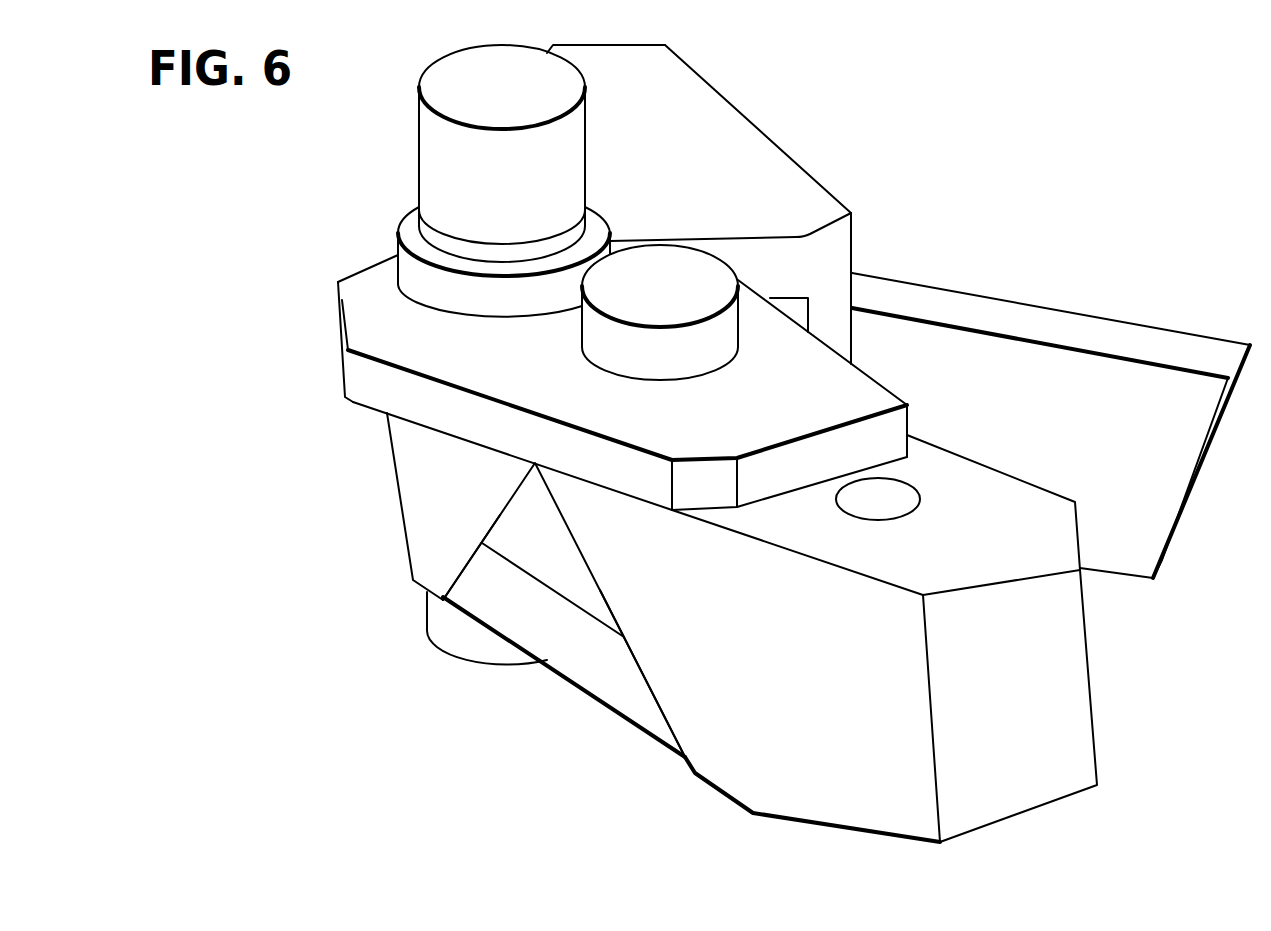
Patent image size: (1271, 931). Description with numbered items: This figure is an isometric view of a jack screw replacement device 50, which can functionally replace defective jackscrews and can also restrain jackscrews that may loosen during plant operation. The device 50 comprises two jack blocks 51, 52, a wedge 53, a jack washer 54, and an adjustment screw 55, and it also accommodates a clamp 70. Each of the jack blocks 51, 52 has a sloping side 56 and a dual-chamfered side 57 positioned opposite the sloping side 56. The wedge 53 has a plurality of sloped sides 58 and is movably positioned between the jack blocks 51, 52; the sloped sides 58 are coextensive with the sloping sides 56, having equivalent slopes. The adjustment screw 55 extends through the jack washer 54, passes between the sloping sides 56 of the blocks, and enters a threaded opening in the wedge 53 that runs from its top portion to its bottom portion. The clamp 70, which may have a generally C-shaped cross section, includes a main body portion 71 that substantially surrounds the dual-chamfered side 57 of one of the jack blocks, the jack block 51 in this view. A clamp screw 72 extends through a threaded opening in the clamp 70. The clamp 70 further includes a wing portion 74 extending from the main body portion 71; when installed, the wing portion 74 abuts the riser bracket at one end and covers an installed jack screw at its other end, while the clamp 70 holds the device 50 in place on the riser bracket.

The jack screw replacement device 50 is at (940, 178).
The jack block 51 is at (445, 512).
The jack block 52 is at (671, 610).
The wedge 53 is at (563, 643).
The jack washer 54 is at (347, 278).
The adjustment screw 55 is at (665, 275).
The sloping side 56 is at (558, 497).
The dual-chamfered side 57 is at (1078, 678).
The sloped side 58 is at (467, 562).
The clamp 70 is at (714, 71).
The main body portion 71 is at (783, 173).
The clamp screw 72 is at (455, 75).
The wing portion 74 is at (1092, 312).